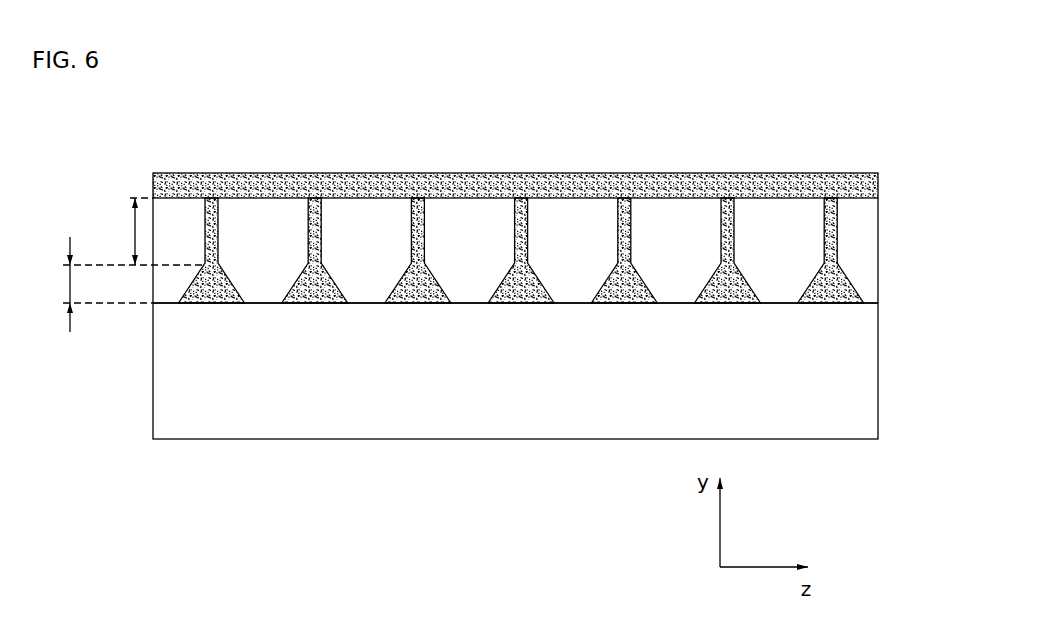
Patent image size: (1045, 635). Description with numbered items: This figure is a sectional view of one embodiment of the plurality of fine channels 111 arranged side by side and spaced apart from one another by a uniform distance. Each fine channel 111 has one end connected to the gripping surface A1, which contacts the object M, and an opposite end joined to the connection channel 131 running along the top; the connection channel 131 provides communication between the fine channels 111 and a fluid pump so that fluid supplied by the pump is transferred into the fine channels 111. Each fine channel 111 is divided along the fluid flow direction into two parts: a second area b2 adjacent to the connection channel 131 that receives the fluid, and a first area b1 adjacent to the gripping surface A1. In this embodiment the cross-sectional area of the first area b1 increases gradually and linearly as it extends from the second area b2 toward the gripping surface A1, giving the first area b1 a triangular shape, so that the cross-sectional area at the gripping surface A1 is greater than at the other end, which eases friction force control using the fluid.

The connection channel 131 is at (472, 173).
The fine channel 111 is at (838, 235).
The gripping surface A1 is at (868, 303).
The object M is at (483, 422).
The first area b1 is at (92, 284).
The second area b2 is at (134, 231).